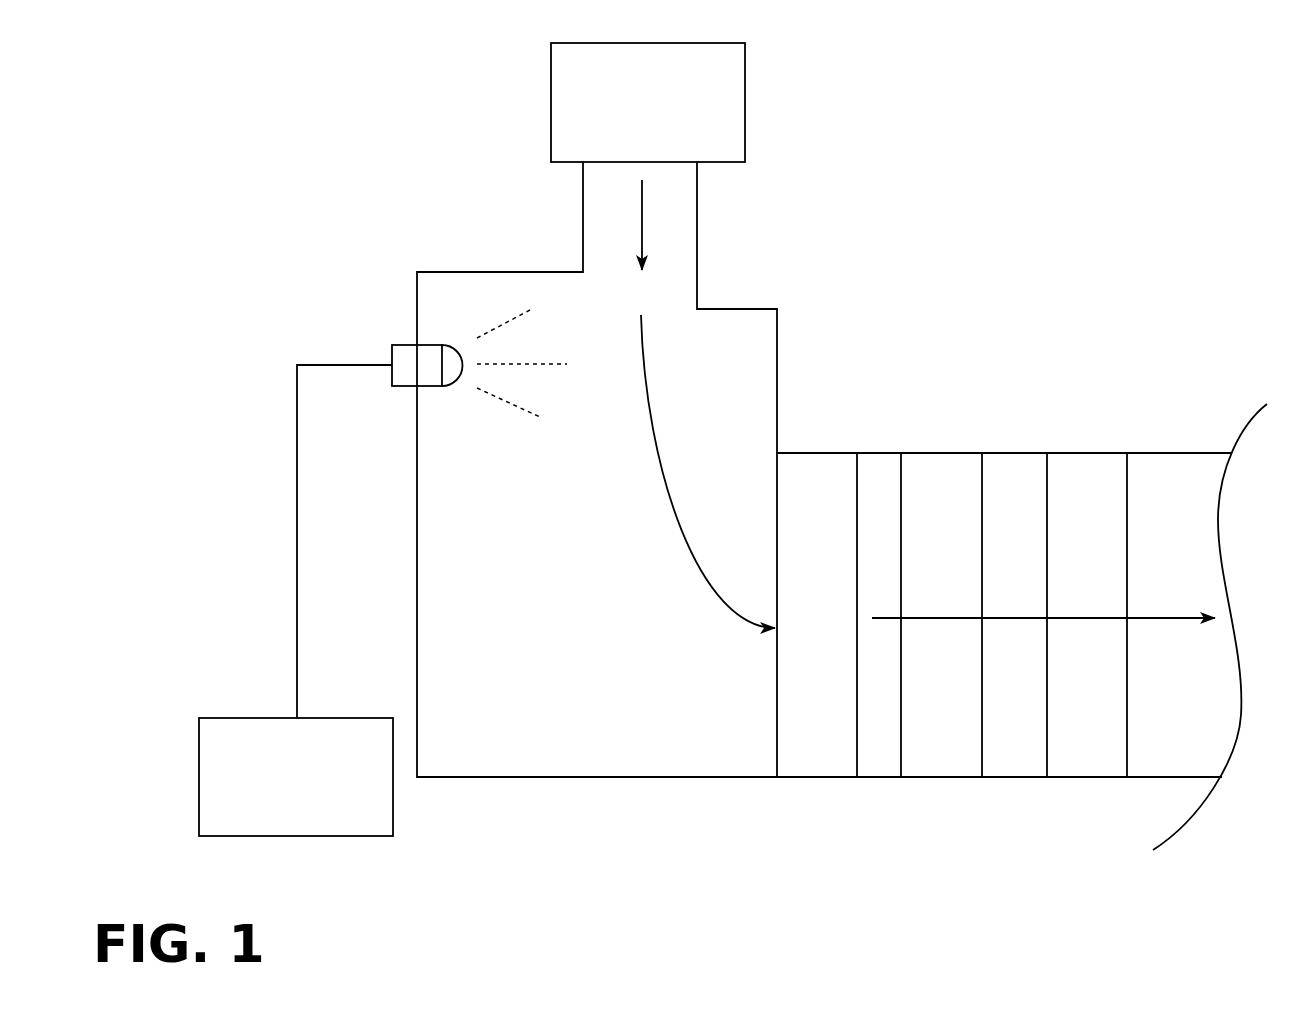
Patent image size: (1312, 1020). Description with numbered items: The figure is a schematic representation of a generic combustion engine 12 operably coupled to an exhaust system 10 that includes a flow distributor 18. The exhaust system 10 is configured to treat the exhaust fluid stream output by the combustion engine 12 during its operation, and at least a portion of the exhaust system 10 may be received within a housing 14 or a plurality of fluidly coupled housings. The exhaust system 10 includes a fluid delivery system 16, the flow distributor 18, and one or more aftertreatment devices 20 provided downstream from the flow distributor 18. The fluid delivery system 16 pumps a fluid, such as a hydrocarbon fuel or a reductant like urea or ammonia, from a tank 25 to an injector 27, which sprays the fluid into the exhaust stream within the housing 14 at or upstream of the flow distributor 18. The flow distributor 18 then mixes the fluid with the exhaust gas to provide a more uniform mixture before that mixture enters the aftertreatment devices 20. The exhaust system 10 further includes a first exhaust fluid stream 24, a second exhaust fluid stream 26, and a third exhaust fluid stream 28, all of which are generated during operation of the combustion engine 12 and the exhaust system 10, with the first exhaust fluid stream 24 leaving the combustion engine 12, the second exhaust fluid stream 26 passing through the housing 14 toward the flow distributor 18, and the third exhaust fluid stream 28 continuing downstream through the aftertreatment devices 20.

The exhaust system 10 is at (1002, 447).
The combustion engine 12 is at (745, 102).
The housing 14 is at (668, 777).
The fluid delivery system 16 is at (277, 447).
The flow distributor 18 is at (817, 453).
The aftertreatment device 20 is at (931, 453).
The first exhaust fluid stream 24 is at (642, 211).
The tank 25 is at (273, 718).
The second exhaust fluid stream 26 is at (653, 447).
The injector 27 is at (414, 345).
The third exhaust fluid stream 28 is at (1099, 618).